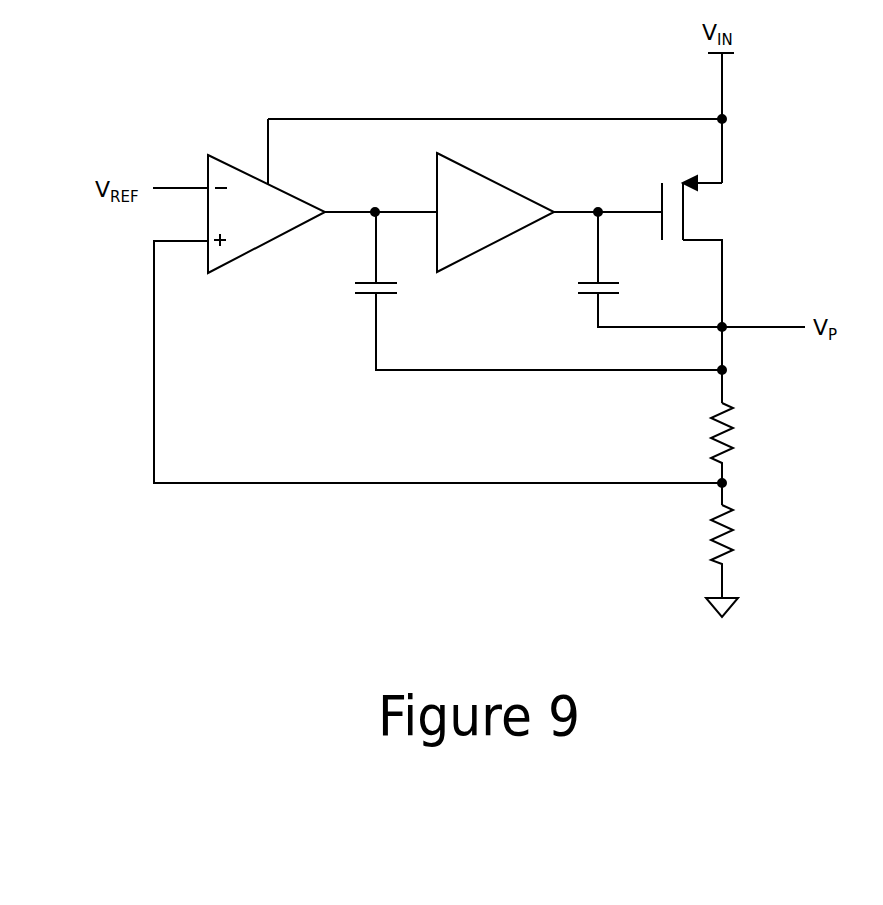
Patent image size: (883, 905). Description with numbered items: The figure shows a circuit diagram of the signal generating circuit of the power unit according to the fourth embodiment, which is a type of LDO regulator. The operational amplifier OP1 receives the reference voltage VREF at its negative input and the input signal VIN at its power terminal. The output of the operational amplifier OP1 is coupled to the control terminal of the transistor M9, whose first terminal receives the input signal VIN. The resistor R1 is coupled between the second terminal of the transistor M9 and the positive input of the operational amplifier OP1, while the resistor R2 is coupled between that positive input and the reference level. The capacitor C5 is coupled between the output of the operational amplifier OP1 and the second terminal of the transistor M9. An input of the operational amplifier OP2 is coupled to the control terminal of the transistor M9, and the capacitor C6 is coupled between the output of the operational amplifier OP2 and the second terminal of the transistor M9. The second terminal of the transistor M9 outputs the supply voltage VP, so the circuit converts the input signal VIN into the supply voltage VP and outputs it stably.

The operational amplifier OP1 is at (291, 219).
The operational amplifier OP2 is at (518, 217).
The capacitor C5 is at (538, 291).
The capacitor C6 is at (650, 269).
The transistor M9 is at (716, 289).
The resistor R1 is at (740, 454).
The resistor R2 is at (740, 551).